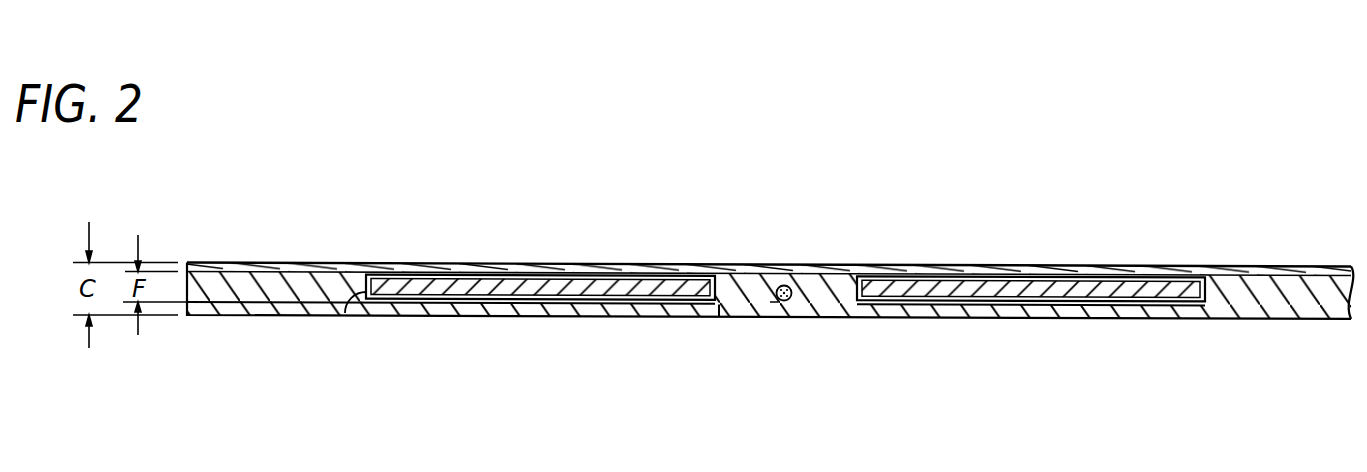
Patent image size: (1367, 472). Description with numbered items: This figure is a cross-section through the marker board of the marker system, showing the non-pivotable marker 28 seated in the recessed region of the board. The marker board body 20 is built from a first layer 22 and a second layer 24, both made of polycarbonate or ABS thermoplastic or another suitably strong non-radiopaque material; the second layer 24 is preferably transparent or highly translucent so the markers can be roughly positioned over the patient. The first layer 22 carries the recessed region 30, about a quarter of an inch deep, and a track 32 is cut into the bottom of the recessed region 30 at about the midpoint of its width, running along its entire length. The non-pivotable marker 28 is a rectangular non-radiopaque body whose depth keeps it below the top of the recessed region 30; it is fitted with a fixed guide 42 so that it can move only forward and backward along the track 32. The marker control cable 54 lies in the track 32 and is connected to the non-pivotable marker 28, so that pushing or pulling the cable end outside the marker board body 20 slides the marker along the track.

The marker board body 20 is at (253, 315).
The first layer 22 is at (1262, 320).
The second layer 24 is at (313, 262).
The non-pivotable marker 28 is at (1093, 288).
The recessed region 30 is at (349, 307).
The track 32 is at (723, 317).
The fixed guide 42 is at (774, 303).
The marker control cable 54 is at (783, 285).